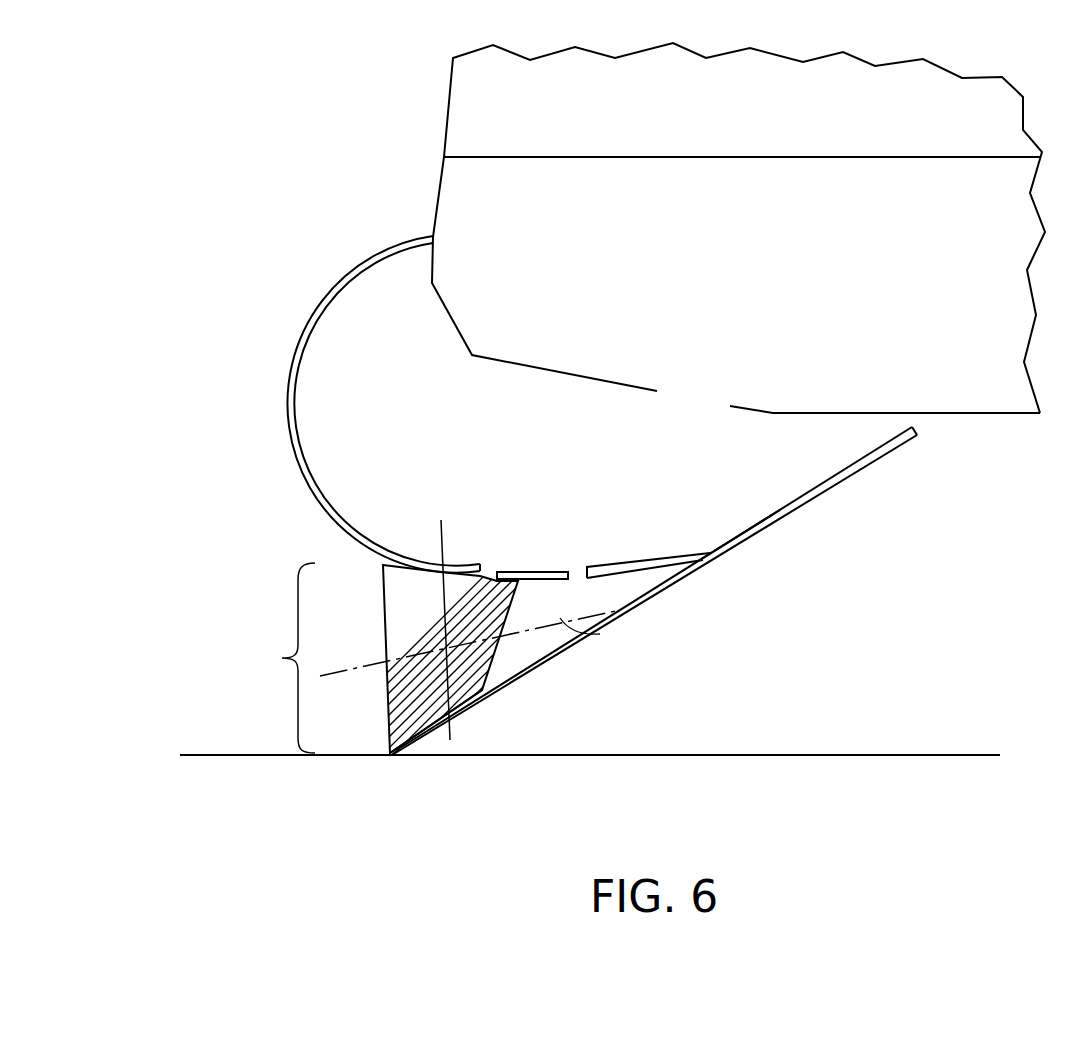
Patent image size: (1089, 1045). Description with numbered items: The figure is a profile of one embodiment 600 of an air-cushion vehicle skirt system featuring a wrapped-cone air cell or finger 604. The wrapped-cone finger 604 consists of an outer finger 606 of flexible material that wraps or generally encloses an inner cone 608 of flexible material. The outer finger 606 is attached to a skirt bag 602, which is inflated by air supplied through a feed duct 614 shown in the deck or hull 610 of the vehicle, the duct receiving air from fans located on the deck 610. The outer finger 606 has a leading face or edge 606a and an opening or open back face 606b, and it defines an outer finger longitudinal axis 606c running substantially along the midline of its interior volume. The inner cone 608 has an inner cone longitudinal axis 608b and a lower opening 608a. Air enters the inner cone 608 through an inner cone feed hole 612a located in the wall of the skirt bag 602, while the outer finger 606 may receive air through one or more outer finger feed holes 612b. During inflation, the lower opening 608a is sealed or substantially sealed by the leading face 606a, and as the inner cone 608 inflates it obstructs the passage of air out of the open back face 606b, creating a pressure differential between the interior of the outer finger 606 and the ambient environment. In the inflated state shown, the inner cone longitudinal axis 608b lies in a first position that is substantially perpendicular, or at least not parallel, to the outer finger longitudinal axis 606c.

The embodiment 600 is at (736, 818).
The skirt bag 602 is at (292, 388).
The wrapped-cone finger 604 is at (261, 658).
The outer finger 606 is at (528, 655).
The leading face 606a is at (665, 590).
The open back face 606b is at (380, 745).
The outer finger longitudinal axis 606c is at (597, 634).
The inner cone 608 is at (388, 606).
The inner cone lower opening 608a is at (432, 756).
The inner cone longitudinal axis 608b is at (441, 520).
The deck 610 is at (450, 190).
The inner cone feed hole 612a is at (490, 566).
The outer finger feed hole 612b is at (583, 566).
The feed duct 614 is at (695, 403).